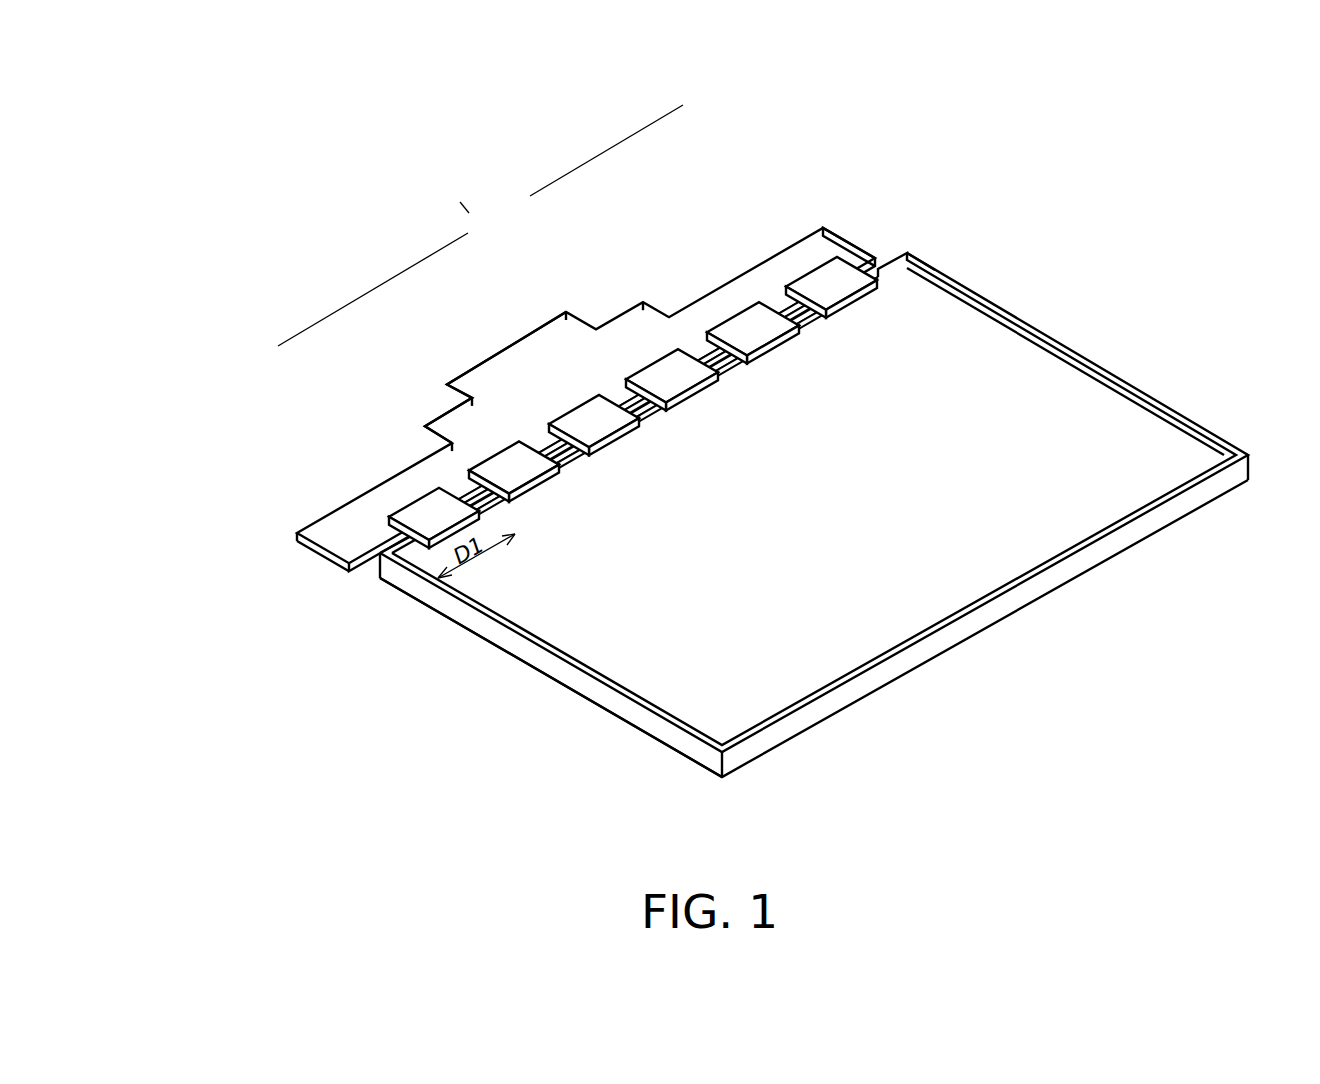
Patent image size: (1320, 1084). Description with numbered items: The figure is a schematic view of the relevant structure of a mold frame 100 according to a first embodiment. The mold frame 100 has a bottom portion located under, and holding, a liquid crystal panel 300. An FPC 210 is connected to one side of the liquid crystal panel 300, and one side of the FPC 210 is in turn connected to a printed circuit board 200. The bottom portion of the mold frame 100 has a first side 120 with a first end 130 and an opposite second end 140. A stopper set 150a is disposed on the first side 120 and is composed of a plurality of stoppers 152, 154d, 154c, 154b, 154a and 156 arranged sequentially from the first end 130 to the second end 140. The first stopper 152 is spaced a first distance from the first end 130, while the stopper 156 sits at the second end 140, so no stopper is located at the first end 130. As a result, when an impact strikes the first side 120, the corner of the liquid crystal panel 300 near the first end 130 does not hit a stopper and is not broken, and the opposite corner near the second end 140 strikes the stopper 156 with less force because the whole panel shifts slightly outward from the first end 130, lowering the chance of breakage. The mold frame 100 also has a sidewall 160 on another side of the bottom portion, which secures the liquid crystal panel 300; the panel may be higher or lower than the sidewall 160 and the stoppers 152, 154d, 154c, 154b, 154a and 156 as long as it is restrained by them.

The mold frame 100 is at (1094, 350).
The first side 120 is at (862, 300).
The first end 130 is at (378, 560).
The second end 140 is at (912, 250).
The stopper set 150a is at (480, 225).
The first stopper 152 is at (455, 383).
The stopper 154a is at (805, 298).
The stopper 154b is at (705, 355).
The stopper 154c is at (567, 445).
The stopper 154d is at (493, 492).
The stopper 156 is at (835, 258).
The sidewall 160 is at (612, 703).
The printed circuit board 200 is at (300, 531).
The FPC 210 is at (422, 510).
The liquid crystal panel 300 is at (840, 512).